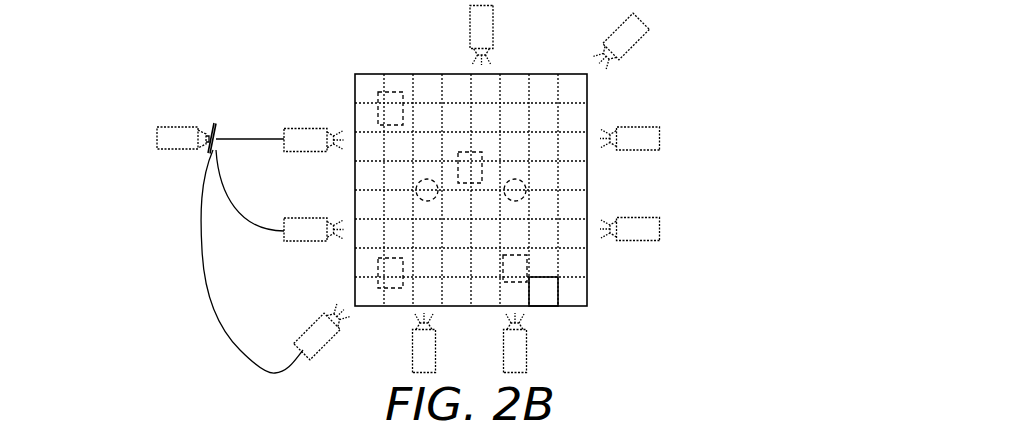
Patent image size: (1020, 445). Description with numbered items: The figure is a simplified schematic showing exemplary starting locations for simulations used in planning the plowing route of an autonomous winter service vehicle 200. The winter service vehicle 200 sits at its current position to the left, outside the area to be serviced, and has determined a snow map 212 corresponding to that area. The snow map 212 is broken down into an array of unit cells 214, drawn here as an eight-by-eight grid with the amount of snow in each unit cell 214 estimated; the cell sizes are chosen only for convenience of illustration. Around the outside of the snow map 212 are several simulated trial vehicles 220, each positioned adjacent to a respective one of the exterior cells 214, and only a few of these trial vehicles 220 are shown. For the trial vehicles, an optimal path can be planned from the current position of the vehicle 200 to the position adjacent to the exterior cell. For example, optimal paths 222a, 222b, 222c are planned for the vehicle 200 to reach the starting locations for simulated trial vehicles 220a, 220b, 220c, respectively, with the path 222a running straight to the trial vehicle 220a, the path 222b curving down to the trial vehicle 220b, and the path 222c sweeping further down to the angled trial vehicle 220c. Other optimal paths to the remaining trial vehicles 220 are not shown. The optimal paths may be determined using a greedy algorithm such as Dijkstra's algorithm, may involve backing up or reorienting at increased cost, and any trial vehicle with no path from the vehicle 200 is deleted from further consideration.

The winter service vehicle 200 is at (177, 126).
The snow map 212 is at (356, 74).
The unit cell 214 is at (374, 82).
The simulated trial vehicle 220 is at (672, 45).
The simulated trial vehicle 220a is at (307, 130).
The simulated trial vehicle 220b is at (307, 219).
The simulated trial vehicle 220c is at (307, 330).
The optimal path 222a is at (253, 138).
The optimal path 222b is at (238, 217).
The optimal path 222c is at (202, 268).